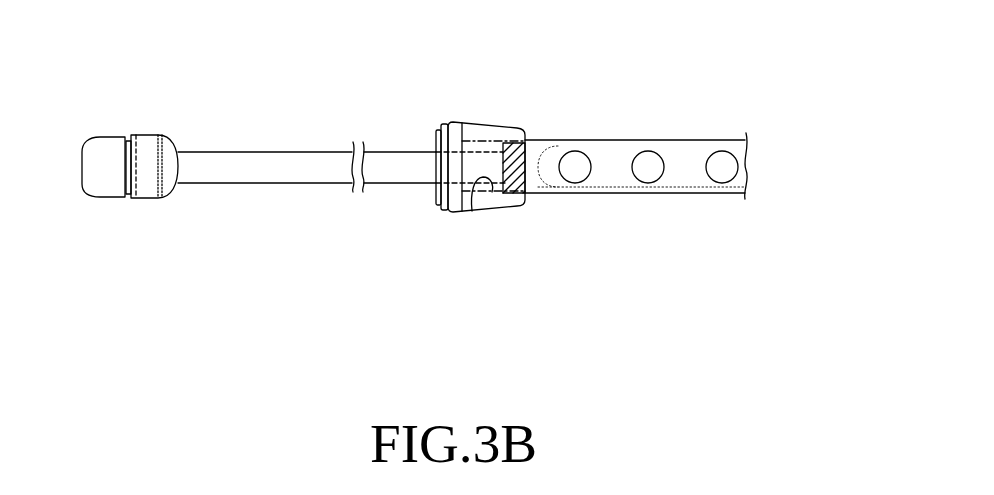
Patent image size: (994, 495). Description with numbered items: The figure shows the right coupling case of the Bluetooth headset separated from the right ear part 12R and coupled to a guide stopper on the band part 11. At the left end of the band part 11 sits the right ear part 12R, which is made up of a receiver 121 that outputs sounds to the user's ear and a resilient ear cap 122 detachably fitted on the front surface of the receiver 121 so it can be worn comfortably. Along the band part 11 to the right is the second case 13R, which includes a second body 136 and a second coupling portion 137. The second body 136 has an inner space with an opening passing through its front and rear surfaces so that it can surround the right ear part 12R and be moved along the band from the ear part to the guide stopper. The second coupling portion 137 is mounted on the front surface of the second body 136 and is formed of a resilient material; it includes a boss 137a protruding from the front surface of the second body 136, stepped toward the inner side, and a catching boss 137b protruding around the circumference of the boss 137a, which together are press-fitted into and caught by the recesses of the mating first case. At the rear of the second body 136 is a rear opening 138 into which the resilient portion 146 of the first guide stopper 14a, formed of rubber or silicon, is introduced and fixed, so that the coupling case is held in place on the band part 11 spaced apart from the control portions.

The right ear part 12R is at (127, 163).
The left ear cap 122 is at (103, 187).
The left receiver 121 is at (152, 187).
The band part 11 is at (278, 150).
The second case 13R is at (481, 168).
The catching boss 137b is at (440, 128).
The boss 137a is at (440, 208).
The second coupling portion 137 is at (450, 213).
The second body 136 is at (497, 122).
The portion of guide stopper 146 is at (512, 190).
The rear opening 138 is at (471, 197).
The first guide stopper 14a is at (635, 140).